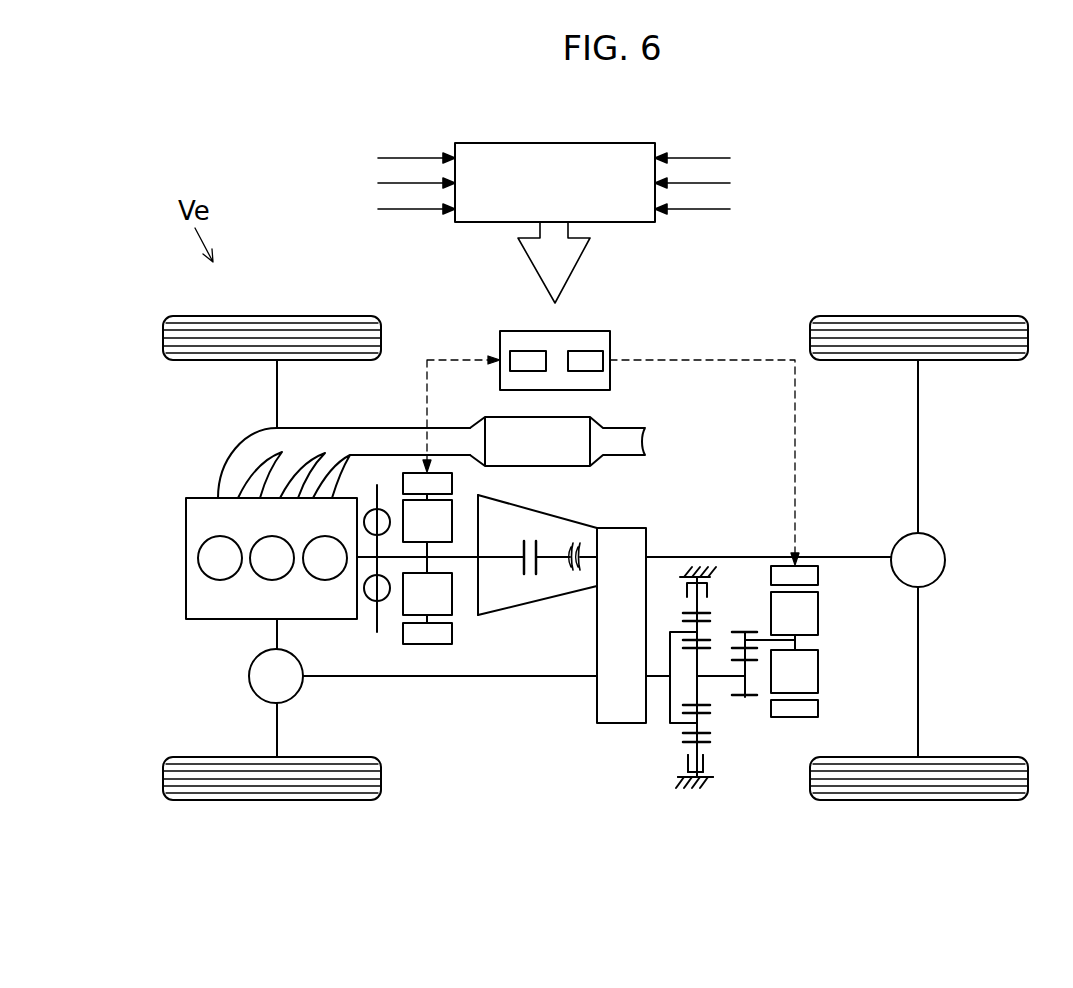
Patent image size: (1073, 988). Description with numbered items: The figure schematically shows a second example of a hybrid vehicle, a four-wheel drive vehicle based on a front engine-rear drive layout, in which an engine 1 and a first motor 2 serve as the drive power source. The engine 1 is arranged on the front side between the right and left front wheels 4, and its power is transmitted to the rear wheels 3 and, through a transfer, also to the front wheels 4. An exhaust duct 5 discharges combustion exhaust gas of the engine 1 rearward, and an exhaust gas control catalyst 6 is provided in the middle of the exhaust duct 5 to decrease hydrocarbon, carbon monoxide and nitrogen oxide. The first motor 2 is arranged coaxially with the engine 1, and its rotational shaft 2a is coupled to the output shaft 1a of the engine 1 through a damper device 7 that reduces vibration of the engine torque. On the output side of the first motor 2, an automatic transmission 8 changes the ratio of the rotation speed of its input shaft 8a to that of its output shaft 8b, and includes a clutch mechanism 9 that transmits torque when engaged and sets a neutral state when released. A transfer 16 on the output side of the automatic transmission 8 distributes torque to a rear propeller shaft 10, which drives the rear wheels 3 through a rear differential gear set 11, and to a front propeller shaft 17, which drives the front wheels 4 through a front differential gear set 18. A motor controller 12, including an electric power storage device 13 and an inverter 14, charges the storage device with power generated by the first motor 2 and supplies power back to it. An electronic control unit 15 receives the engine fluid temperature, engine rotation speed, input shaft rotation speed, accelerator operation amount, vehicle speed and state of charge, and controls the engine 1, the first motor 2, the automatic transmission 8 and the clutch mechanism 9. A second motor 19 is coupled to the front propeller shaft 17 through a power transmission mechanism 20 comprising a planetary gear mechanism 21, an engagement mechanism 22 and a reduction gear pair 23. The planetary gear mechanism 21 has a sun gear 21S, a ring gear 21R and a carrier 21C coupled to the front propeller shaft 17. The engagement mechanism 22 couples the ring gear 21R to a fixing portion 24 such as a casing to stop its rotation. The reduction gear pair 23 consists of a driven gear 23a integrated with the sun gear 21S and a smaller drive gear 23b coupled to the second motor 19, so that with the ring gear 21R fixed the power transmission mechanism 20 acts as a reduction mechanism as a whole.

The engine 1 is at (219, 612).
The output shaft 1a is at (363, 560).
The first motor 2 is at (441, 663).
The rotational shaft 2a is at (395, 560).
The rear wheels 3 is at (919, 323).
The front wheels 4 is at (293, 323).
The exhaust duct 5 is at (303, 437).
The exhaust gas control catalyst 6 is at (548, 458).
The damper device 7 is at (377, 656).
The automatic transmission 8 is at (512, 597).
The input shaft 8a is at (492, 560).
The output shaft 8b is at (557, 562).
The clutch mechanism 9 is at (539, 588).
The rear propeller shaft 10 is at (700, 557).
The rear differential gear set 11 is at (932, 567).
The motor controller 12 is at (598, 331).
The electric power storage device 13 is at (527, 353).
The inverter 14 is at (590, 357).
The electronic control unit 15 is at (559, 143).
The transfer 16 is at (627, 527).
The front propeller shaft 17 is at (512, 678).
The front differential gear set 18 is at (272, 679).
The second motor 19 is at (837, 698).
The power transmission mechanism 20 is at (715, 725).
The planetary gear mechanism 21 is at (651, 685).
The carrier 21C is at (670, 689).
The ring gear 21R is at (702, 612).
The sun gear 21S is at (710, 703).
The engagement mechanism 22 is at (676, 777).
The reduction gear pair 23 is at (797, 680).
The driven gear 23a is at (752, 662).
The drive gear 23b is at (750, 631).
The fixing portion 24 is at (700, 786).